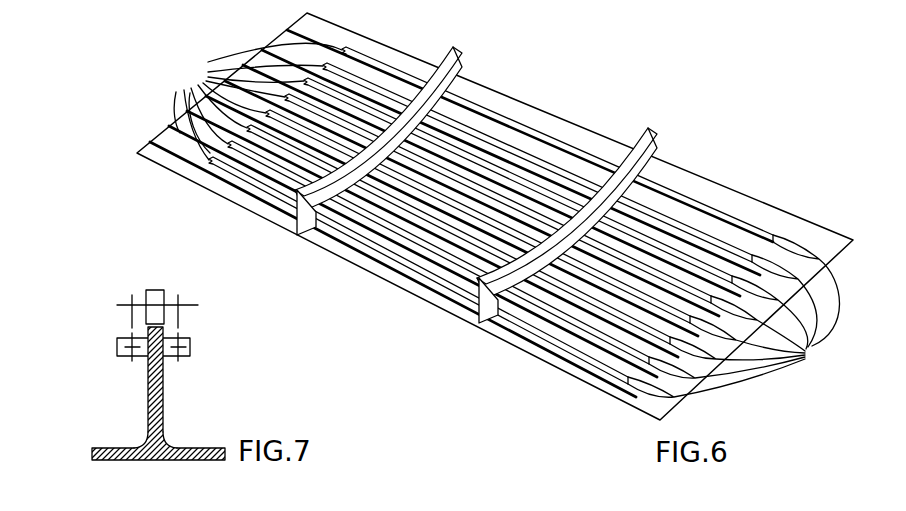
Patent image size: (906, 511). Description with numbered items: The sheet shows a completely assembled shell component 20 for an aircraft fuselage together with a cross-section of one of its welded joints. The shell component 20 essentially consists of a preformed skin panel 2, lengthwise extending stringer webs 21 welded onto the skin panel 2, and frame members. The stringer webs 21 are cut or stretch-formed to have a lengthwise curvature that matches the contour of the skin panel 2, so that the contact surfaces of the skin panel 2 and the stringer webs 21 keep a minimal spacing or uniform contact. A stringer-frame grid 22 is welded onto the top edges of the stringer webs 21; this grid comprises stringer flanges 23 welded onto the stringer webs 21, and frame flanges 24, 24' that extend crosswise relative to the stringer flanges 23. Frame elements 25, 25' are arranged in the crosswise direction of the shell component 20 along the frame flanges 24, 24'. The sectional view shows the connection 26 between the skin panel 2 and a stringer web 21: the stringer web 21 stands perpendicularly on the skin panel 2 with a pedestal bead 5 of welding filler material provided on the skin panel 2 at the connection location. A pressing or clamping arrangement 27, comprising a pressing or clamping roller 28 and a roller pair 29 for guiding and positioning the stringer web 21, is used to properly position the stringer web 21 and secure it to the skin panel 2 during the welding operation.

In FIG. 6, the skin panel 2 is at (746, 199).
In FIG. 7, the skin panel 2 is at (115, 461).
In FIG. 7, the pedestal bead 5 is at (148, 434).
In FIG. 6, the shell component 20 is at (643, 68).
In FIG. 6, the stringer web 21 is at (734, 316).
In FIG. 7, the stringer web 21 is at (164, 391).
In FIG. 6, the stringer-frame grid 22 is at (515, 128).
In FIG. 6, the stringer flanges 23 is at (252, 101).
In FIG. 6, the frame flange 24 is at (464, 322).
In FIG. 6, the frame flange 24' is at (274, 227).
In FIG. 6, the frame element 25 is at (591, 213).
In FIG. 6, the frame element 25' is at (404, 122).
In FIG. 7, the connection 26 is at (118, 391).
In FIG. 7, the pressing or clamping arrangement 27 is at (108, 316).
In FIG. 7, the pressing or clamping roller 28 is at (156, 291).
In FIG. 7, the roller pair 29 is at (190, 347).